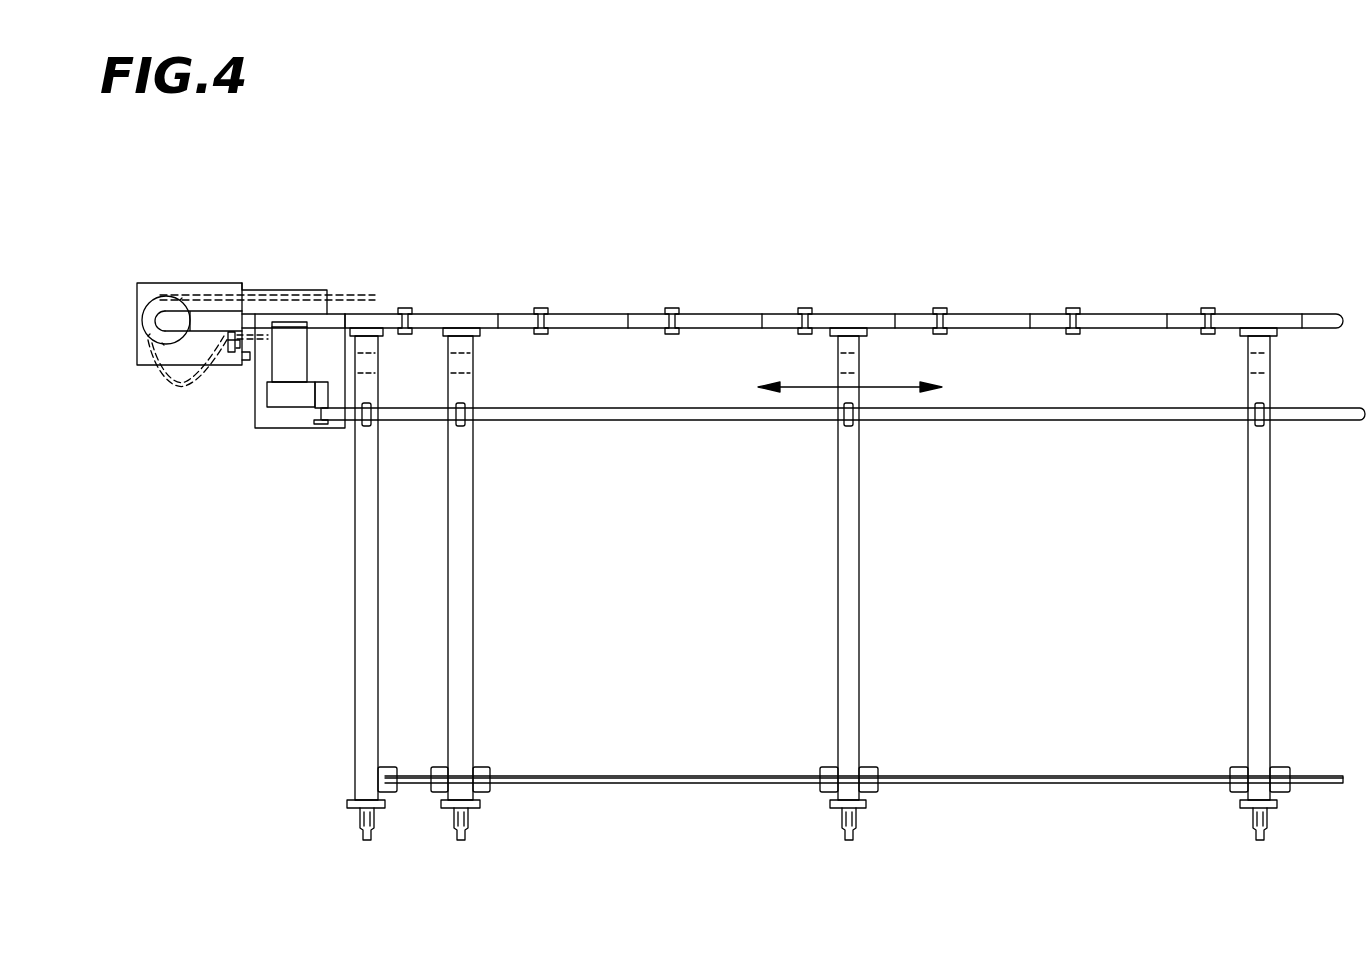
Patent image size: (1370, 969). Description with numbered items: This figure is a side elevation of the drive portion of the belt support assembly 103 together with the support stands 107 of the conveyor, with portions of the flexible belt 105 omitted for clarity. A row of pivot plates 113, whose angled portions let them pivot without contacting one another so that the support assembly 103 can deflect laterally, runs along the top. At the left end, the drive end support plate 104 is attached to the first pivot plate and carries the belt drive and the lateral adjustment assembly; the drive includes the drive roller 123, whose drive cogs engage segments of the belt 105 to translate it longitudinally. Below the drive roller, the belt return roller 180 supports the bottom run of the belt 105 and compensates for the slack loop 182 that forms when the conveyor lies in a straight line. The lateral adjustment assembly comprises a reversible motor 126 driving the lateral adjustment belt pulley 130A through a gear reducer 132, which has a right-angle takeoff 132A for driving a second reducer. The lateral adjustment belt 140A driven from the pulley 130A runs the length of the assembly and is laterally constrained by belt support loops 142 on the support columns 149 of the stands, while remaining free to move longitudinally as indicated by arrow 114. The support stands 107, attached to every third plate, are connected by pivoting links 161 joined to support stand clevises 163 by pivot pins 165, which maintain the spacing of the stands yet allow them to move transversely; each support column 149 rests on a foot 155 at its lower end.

The belt support assembly 103 is at (922, 188).
The drive end support plate 104 is at (213, 311).
The flexible belt 105 is at (348, 297).
The support stands 107 is at (898, 622).
The pivot plates 113 is at (733, 313).
The arrow 114 is at (883, 387).
The drive roller 123 is at (153, 300).
The reversible motor 126 is at (255, 378).
The lateral adjustment belt pulley 130A is at (322, 425).
The gear reducer 132 is at (283, 408).
The right-angle takeoff 132A is at (343, 405).
The lateral adjustment belt 140A is at (1067, 421).
The belt support loops 142 is at (475, 422).
The support columns 149 is at (475, 598).
The leveling foot 155 is at (866, 803).
The pivoting links 161 is at (673, 775).
The support stand clevises 163 is at (490, 774).
The pivot pins 165 is at (488, 765).
The belt return roller 180 is at (231, 340).
The slack loop 182 is at (157, 381).